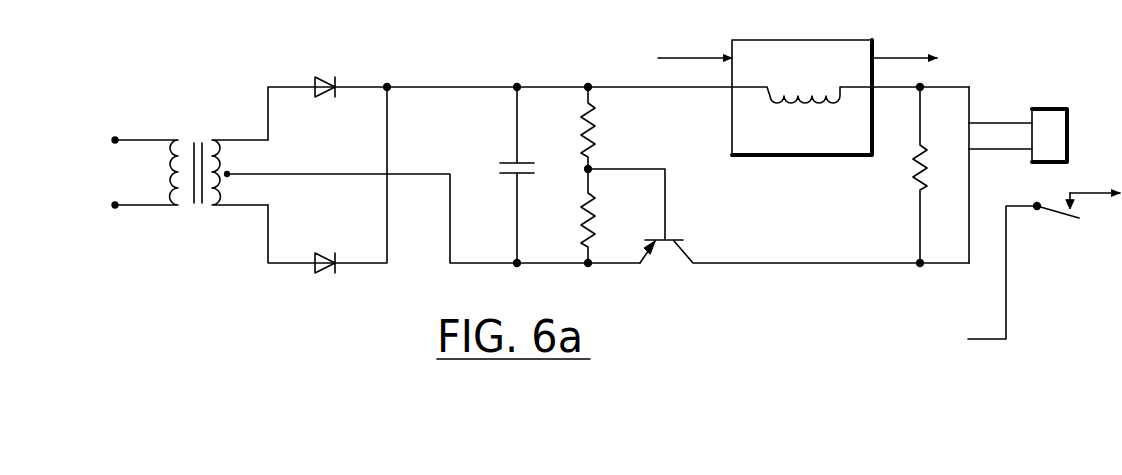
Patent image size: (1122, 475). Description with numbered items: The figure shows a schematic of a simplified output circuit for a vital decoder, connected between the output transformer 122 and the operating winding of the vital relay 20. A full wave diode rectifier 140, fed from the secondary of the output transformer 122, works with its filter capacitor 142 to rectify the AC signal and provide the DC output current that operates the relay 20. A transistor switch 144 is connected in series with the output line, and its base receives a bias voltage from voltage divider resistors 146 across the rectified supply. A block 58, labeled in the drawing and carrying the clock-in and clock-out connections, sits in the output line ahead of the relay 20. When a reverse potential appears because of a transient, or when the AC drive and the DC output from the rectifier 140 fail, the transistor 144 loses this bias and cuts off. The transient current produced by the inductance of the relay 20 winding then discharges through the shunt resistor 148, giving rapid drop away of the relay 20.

The output transformer 122 is at (200, 207).
The full wave diode rectifier 140 is at (338, 153).
The filter capacitor 142 is at (509, 159).
The voltage divider resistors 146 is at (596, 129).
The transistor switch 144 is at (690, 248).
The clock detector N3 58 is at (804, 40).
The shunt resistor 148 is at (912, 190).
The vital relay 20 is at (1074, 176).